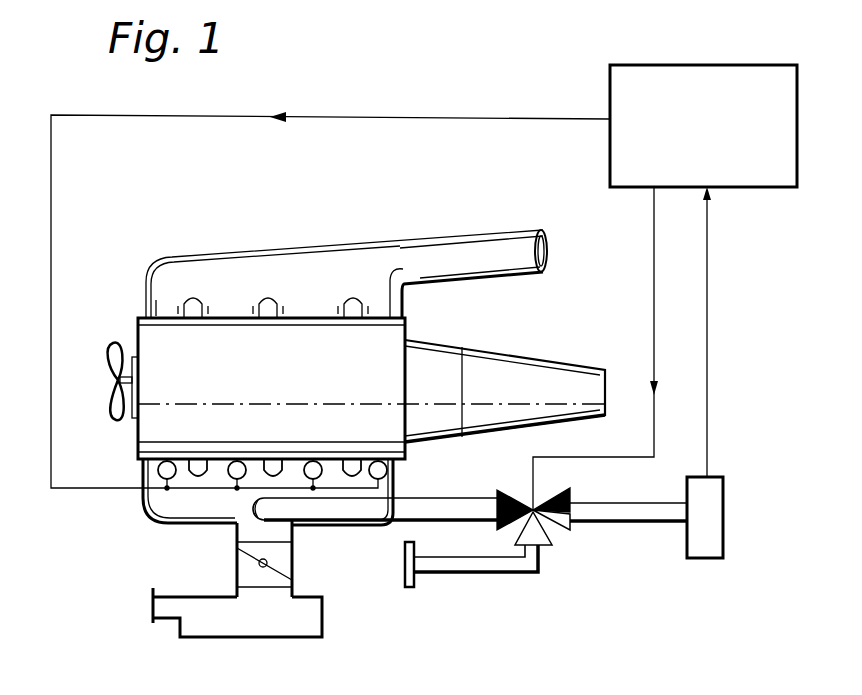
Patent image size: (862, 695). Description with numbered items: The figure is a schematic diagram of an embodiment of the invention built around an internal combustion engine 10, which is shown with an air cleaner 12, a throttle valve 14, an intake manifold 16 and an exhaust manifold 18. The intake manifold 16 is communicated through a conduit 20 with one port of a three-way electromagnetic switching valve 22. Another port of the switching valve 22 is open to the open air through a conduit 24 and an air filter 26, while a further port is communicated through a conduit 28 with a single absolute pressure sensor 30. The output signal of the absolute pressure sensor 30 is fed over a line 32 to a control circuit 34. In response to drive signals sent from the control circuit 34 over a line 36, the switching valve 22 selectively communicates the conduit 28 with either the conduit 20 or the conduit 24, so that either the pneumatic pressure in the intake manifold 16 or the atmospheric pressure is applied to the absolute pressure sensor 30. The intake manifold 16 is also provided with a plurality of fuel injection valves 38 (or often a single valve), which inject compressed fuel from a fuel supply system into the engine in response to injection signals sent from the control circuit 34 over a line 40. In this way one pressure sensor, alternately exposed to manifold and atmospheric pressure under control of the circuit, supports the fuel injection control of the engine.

The internal combustion engine 10 is at (393, 360).
The air cleaner 12 is at (255, 625).
The throttle valve 14 is at (292, 568).
The intake manifold 16 is at (178, 502).
The exhaust manifold 18 is at (352, 262).
The conduit 20 is at (440, 505).
The three-way electromagnetic switching valve 22 is at (558, 537).
The conduit 24 is at (475, 570).
The air filter 26 is at (410, 590).
The conduit 28 is at (635, 523).
The absolute pressure sensor 30 is at (723, 516).
The line 32 is at (709, 340).
The control circuit 34 is at (797, 136).
The line 36 is at (654, 306).
The fuel injection valves 38 is at (373, 460).
The line 40 is at (187, 118).